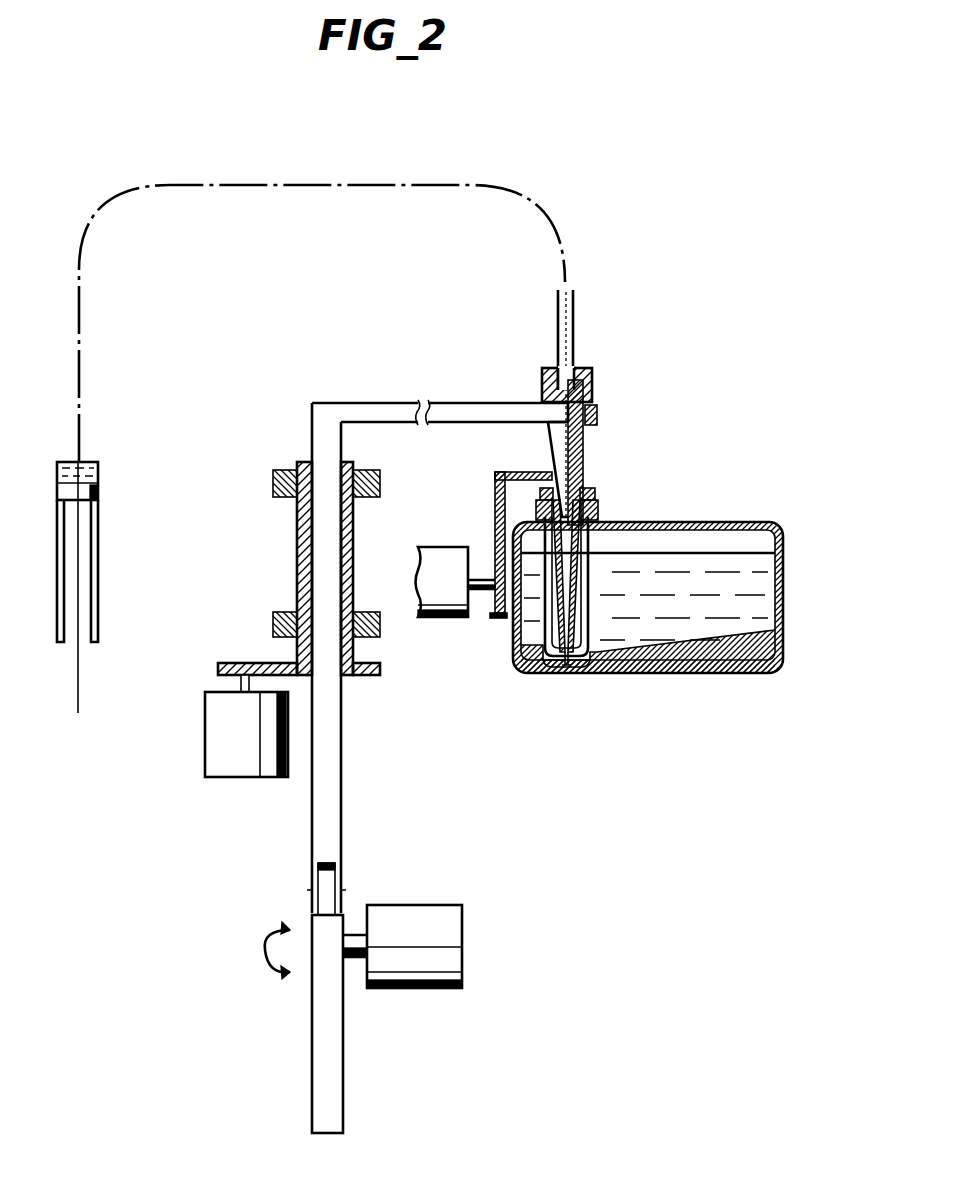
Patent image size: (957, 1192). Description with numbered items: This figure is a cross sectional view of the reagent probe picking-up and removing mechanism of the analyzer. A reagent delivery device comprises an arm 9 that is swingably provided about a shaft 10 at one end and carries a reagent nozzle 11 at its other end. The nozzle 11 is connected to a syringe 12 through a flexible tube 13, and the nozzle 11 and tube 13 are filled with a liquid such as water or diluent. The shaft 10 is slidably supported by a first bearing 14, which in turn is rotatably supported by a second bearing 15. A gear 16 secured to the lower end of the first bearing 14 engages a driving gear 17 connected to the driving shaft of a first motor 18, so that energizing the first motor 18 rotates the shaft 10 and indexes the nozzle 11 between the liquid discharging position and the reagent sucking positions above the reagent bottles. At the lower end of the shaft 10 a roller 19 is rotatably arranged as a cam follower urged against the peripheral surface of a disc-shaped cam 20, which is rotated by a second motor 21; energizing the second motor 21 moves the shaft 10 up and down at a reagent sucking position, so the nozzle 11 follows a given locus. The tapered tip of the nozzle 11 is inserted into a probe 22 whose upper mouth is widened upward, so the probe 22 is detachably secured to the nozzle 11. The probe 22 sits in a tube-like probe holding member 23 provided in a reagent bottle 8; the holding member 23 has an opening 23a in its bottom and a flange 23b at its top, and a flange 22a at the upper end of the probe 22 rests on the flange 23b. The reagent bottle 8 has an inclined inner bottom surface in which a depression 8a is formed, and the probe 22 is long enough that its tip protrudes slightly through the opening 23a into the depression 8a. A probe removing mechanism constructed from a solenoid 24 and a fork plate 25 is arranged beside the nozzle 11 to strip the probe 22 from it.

The reagent bottle 8 is at (758, 525).
The depression 8a is at (520, 672).
The arm 9 is at (447, 402).
The shaft 10 is at (312, 433).
The reagent nozzle 11 is at (584, 442).
The syringe 12 is at (98, 545).
The flexible tube 13 is at (574, 315).
The first bearing 14 is at (297, 553).
The second bearing 15 is at (273, 480).
The gear 16 is at (382, 668).
The driving gear 17 is at (220, 663).
The first motor 18 is at (205, 712).
The roller 19 is at (326, 880).
The disc-shaped cam 20 is at (316, 1038).
The second motor 21 is at (455, 945).
The probe 22 is at (588, 545).
The flange 22a is at (590, 492).
The probe holding member 23 is at (618, 656).
The opening 23a is at (567, 668).
The flange 23b is at (592, 508).
The solenoid 24 is at (440, 550).
The fork plate 25 is at (495, 478).